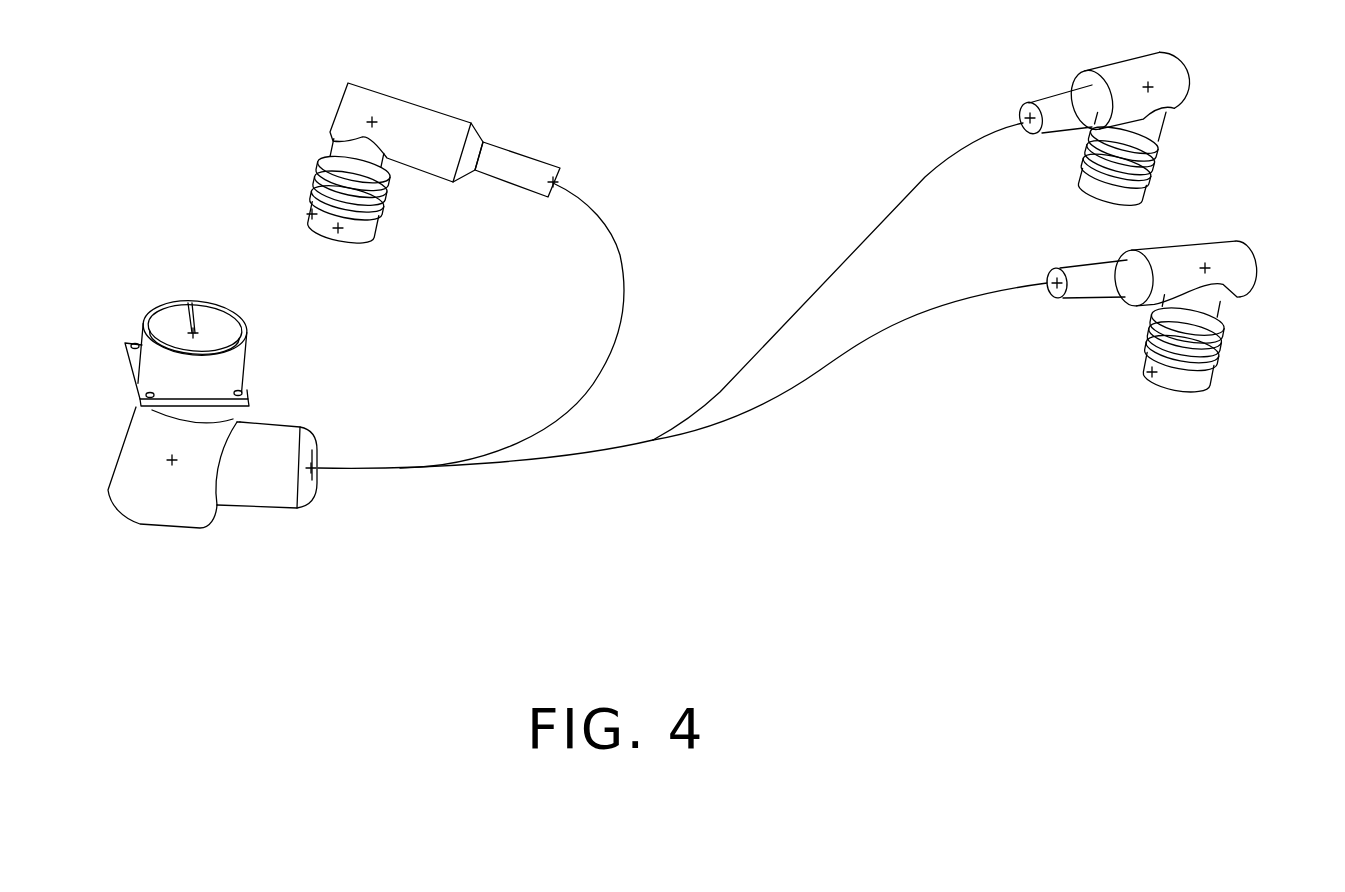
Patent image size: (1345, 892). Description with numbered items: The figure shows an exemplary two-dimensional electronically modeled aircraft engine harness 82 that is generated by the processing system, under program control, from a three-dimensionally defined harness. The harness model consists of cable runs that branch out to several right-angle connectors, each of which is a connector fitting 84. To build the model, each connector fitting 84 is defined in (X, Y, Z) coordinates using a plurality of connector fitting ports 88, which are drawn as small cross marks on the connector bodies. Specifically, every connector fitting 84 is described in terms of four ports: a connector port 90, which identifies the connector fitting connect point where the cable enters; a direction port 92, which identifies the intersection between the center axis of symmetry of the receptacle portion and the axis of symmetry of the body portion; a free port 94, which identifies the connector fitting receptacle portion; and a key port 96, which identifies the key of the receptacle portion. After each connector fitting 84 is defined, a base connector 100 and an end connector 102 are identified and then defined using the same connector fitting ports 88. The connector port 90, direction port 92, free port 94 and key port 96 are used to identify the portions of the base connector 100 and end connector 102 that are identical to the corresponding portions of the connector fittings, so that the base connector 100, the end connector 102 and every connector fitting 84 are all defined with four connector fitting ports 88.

The two-dimensional electronically modeled aircraft engine harness 82 is at (663, 548).
The connector fitting 84 is at (406, 98).
The connector fitting port 88 is at (372, 122).
The connector port 90 is at (556, 182).
The direction port 92 is at (1247, 255).
The free port 94 is at (312, 215).
The key port 96 is at (338, 230).
The base connector 100 is at (268, 422).
The end connector 102 is at (1222, 350).